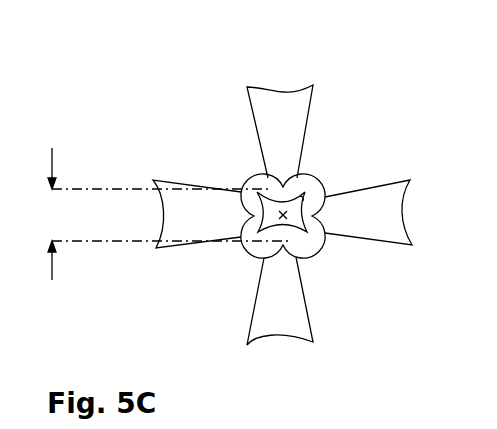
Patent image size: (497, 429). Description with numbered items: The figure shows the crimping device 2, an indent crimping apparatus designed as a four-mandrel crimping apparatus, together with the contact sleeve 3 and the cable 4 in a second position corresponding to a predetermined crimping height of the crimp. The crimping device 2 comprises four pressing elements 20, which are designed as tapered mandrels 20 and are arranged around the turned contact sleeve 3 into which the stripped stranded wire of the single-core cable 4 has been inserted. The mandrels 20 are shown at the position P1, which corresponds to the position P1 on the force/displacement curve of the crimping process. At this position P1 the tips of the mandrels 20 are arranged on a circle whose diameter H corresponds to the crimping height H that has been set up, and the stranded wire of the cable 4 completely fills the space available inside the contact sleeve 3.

The crimping device 2 is at (100, 77).
The contact sleeve 3 is at (308, 176).
The single-core cable 4 is at (262, 193).
The pressing elements 20 is at (290, 326).
The position P1 is at (262, 229).
The crimping height H is at (169, 214).